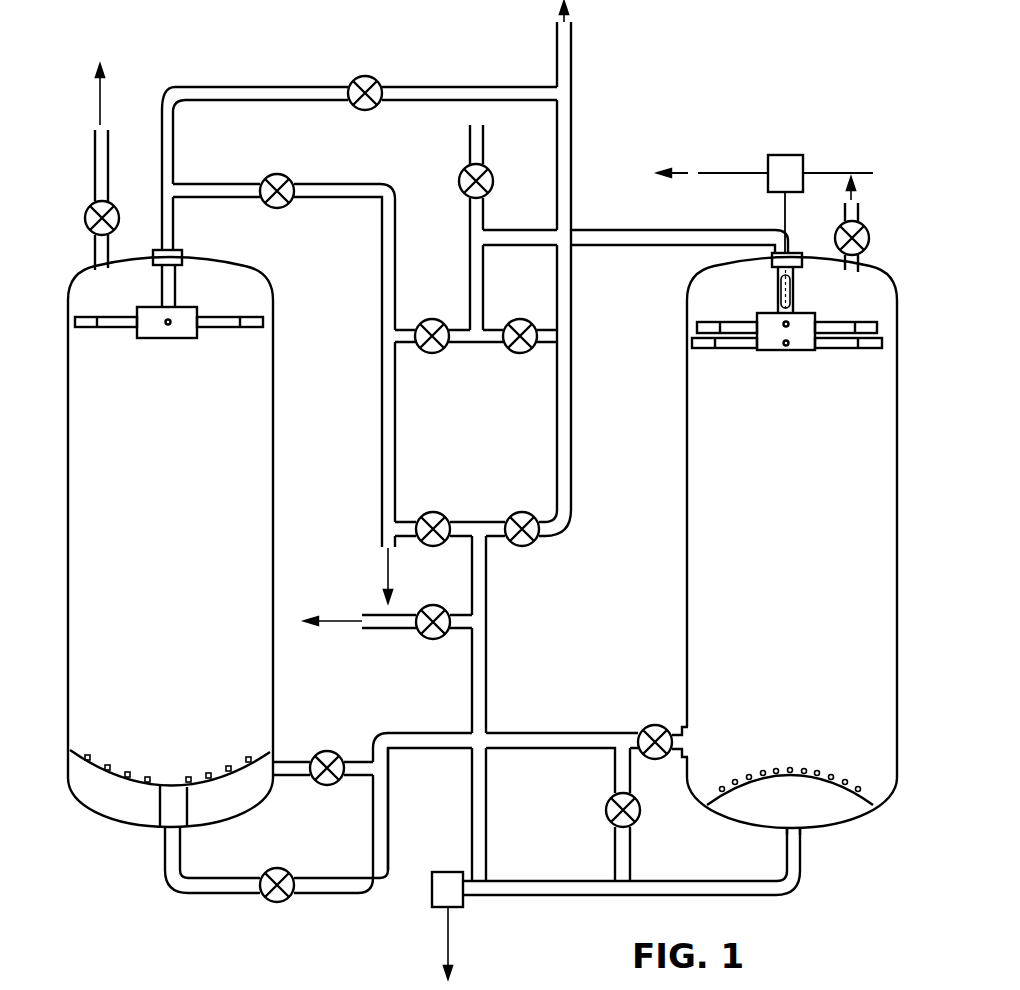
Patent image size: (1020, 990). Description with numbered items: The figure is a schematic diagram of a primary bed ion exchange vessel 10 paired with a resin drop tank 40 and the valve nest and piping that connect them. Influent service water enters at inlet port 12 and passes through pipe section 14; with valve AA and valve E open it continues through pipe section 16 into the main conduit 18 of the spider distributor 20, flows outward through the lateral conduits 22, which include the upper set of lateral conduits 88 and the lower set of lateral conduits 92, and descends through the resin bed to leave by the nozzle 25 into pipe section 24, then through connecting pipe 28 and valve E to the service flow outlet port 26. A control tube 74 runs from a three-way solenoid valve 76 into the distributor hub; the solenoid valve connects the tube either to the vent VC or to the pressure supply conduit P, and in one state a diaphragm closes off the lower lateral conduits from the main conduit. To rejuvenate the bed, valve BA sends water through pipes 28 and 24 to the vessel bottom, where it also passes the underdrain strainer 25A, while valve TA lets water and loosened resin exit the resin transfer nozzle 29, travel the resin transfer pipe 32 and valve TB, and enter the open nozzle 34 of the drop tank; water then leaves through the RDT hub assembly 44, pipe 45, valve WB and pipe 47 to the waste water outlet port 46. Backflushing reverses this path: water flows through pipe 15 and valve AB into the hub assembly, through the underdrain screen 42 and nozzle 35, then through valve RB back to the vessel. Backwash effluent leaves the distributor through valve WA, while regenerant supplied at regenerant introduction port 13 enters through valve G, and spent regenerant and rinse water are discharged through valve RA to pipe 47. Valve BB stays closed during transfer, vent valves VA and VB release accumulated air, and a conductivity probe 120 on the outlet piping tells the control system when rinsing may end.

The exchange vessel 10 is at (774, 565).
The inlet port 12 is at (578, 20).
The regenerant introduction port 13 is at (482, 128).
The pipe section 14 is at (573, 166).
The pipe 15 is at (472, 70).
The pipe section 16 is at (652, 246).
The main conduit 18 is at (796, 290).
The spider distributor 20 is at (792, 362).
The lateral conduits 22 is at (692, 340).
The pipe section 24 is at (670, 886).
The nozzle 25 is at (803, 832).
The underdrain strainer 25A is at (808, 770).
The service flow outlet port 26 is at (362, 630).
The connecting pipe 28 is at (488, 697).
The resin transfer nozzle 29 is at (677, 722).
The resin transfer pipe 32 is at (553, 750).
The open nozzle 34 is at (153, 840).
The nozzle 35 is at (279, 780).
The resin drop tank 40 is at (152, 605).
The underdrain screen 42 is at (130, 763).
The RDT hub assembly 44 is at (166, 349).
The pipe 45 is at (178, 238).
The waste water outlet port 46 is at (380, 553).
The pipe 47 is at (380, 457).
The control tube 74 is at (778, 200).
The three-way solenoid valve 76 is at (790, 155).
The upper set of lateral conduits 88 is at (863, 322).
The lower set of lateral conduits 92 is at (870, 346).
The conductivity probe 120 is at (430, 902).
The valve AB is at (371, 76).
The valve WB is at (276, 174).
The valve VB is at (85, 218).
The valve VA is at (872, 231).
The vent VC is at (727, 172).
The pressure supply conduit P is at (830, 172).
The valve G is at (493, 182).
The valve WA is at (436, 354).
The valve AA is at (526, 354).
The valve RA is at (438, 512).
The valve BA is at (517, 548).
The valve E is at (440, 606).
The valve RB is at (332, 752).
The valve TB is at (275, 903).
The valve TA is at (668, 760).
The valve BB is at (610, 823).